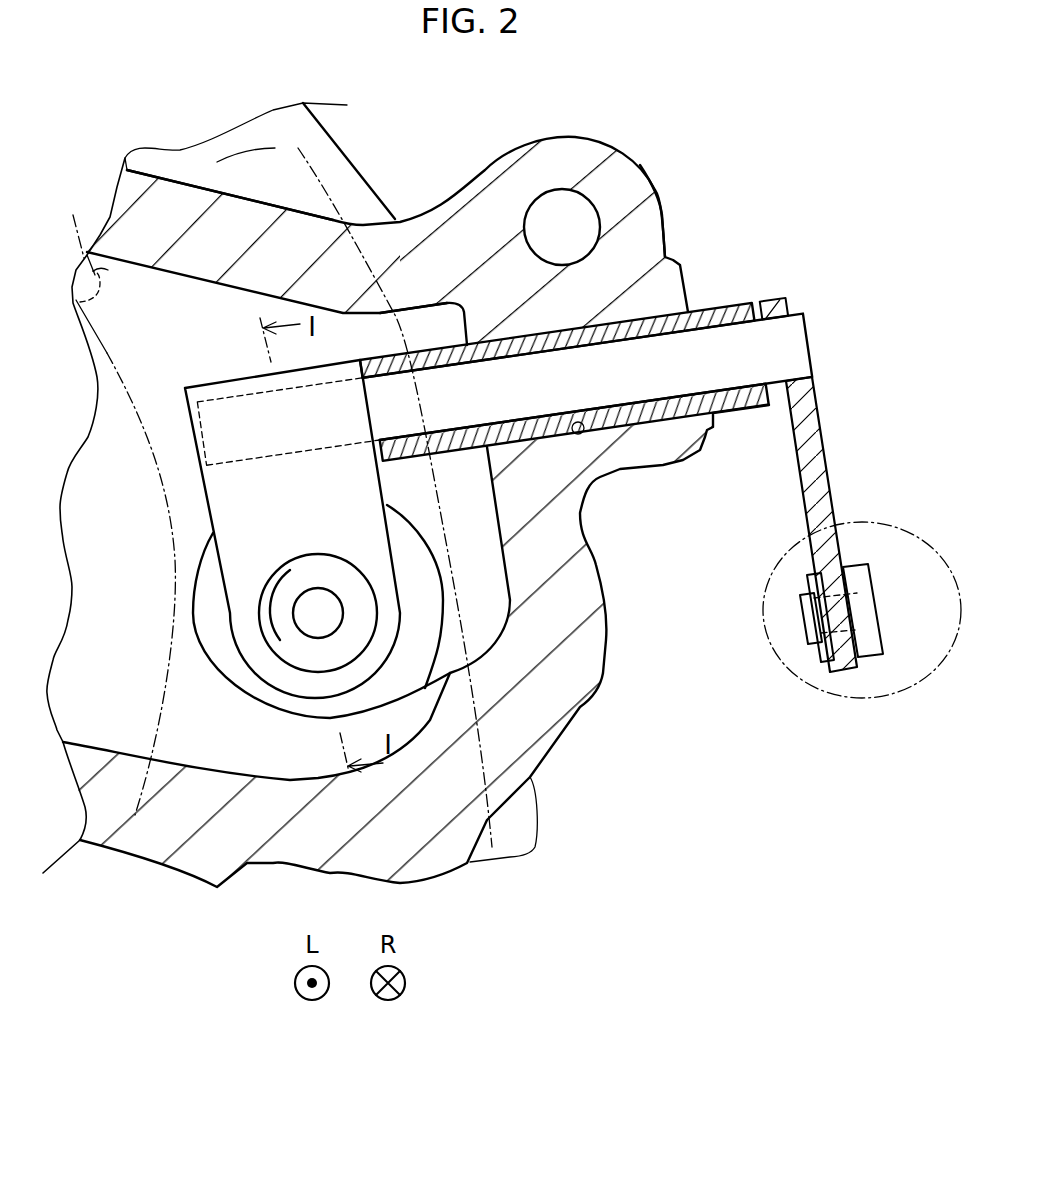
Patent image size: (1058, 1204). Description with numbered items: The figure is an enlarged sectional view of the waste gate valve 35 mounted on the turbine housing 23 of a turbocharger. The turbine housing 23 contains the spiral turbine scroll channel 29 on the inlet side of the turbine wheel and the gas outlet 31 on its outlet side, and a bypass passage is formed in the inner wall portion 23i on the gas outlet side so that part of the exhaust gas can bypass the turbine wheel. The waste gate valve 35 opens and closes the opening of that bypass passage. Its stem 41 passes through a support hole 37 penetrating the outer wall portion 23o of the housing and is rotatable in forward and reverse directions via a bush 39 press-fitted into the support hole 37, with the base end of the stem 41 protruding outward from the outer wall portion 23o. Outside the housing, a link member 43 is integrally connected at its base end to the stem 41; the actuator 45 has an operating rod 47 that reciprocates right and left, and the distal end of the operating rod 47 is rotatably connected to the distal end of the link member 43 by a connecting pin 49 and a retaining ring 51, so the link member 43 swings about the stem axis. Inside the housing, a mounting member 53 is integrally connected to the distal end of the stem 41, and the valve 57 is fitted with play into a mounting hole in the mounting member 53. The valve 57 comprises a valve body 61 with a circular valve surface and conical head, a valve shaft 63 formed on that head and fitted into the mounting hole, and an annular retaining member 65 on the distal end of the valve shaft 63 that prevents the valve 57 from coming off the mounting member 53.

The turbine housing 23 is at (565, 138).
The outer wall portion 23o is at (663, 216).
The inner wall portion 23i is at (112, 717).
The turbine scroll channel 29 is at (92, 262).
The gas outlet 31 is at (248, 316).
The waste gate valve 35 is at (420, 334).
The support hole 37 is at (578, 434).
The bush 39 is at (520, 337).
The stem 41 is at (793, 349).
The link member 43 is at (808, 414).
The actuator 45 is at (893, 703).
The operating rod 47 is at (858, 587).
The connecting pin 49 is at (800, 633).
The retaining ring 51 is at (823, 660).
The mounting member 53 is at (212, 526).
The valve 57 is at (493, 614).
The valve body 61 is at (433, 598).
The valve shaft 63 is at (318, 622).
The retaining member 65 is at (285, 640).